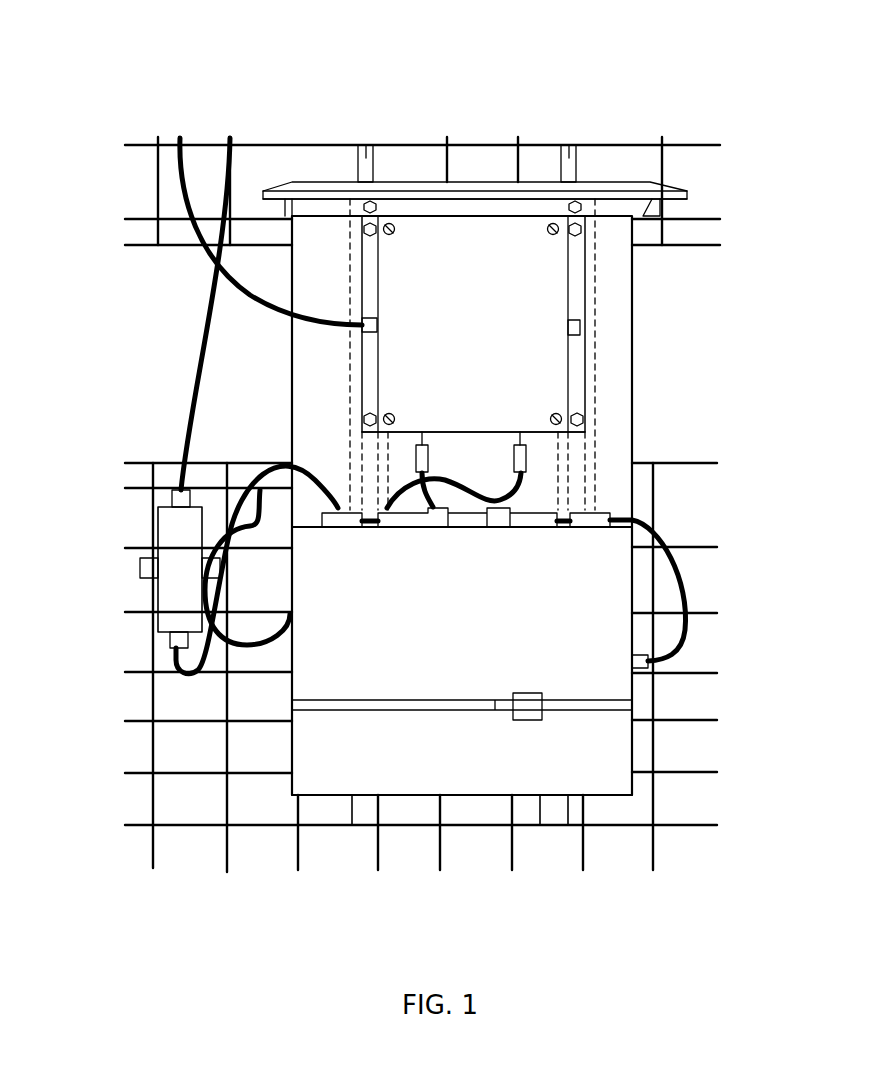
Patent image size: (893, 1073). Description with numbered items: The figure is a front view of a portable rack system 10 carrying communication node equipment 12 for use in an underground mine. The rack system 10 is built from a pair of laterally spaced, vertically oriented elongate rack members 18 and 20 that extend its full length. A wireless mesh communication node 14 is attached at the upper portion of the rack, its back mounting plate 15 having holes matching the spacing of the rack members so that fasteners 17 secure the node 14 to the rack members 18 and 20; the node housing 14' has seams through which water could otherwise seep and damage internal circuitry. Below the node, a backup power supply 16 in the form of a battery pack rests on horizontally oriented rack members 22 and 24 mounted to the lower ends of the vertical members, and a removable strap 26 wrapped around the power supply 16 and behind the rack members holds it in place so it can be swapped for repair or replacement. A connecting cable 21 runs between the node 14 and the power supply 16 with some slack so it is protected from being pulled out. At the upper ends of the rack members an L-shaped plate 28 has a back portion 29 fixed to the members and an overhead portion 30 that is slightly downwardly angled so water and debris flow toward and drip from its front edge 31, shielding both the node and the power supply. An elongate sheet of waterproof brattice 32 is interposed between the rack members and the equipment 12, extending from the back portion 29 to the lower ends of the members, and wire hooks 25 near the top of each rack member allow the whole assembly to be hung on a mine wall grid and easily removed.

The portable rack system 10 is at (302, 368).
The communication node equipment 12 is at (604, 561).
The wireless mesh communication node 14 is at (311, 321).
The node housing 14' is at (402, 412).
The back mounting plate 15 is at (368, 265).
The backup power supply 16 is at (582, 755).
The fasteners 17 is at (375, 235).
The rack member 18 is at (372, 466).
The rack member 20 is at (593, 298).
The connecting cable 21 is at (660, 602).
The horizontally oriented rack member 22 is at (362, 818).
The horizontally oriented rack member 24 is at (552, 814).
The wire hooks 25 is at (365, 143).
The strap 26 is at (317, 705).
The L-shaped plate 28 is at (582, 190).
The back portion 29 is at (622, 206).
The overhead portion 30 is at (505, 188).
The front edge 31 is at (437, 198).
The brattice 32 is at (612, 347).